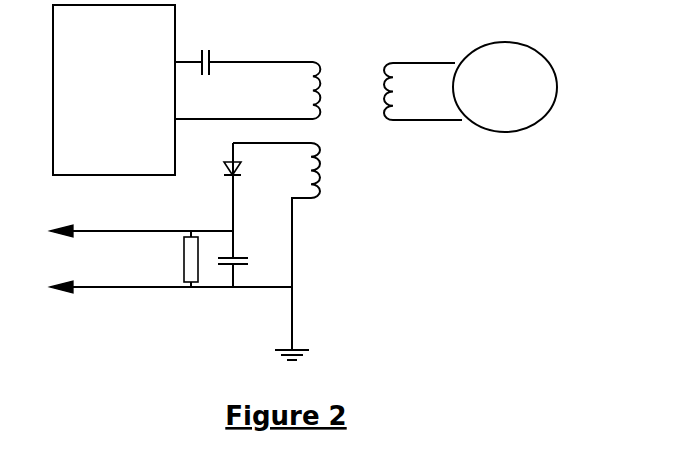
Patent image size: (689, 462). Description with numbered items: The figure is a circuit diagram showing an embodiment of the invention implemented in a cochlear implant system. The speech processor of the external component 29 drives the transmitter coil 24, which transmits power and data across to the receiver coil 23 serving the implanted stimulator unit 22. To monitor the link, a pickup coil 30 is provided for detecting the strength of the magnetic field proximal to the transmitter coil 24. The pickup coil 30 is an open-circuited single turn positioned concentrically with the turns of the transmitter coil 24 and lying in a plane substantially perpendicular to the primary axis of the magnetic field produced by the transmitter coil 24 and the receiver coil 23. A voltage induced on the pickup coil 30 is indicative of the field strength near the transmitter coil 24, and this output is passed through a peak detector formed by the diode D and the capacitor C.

The implanted stimulator unit 22 is at (505, 87).
The receiver coil 23 is at (422, 77).
The transmitter coil 24 is at (247, 76).
The external component 29 is at (114, 90).
The pickup coil 30 is at (300, 246).
The diode D is at (221, 187).
The capacitor C is at (237, 259).